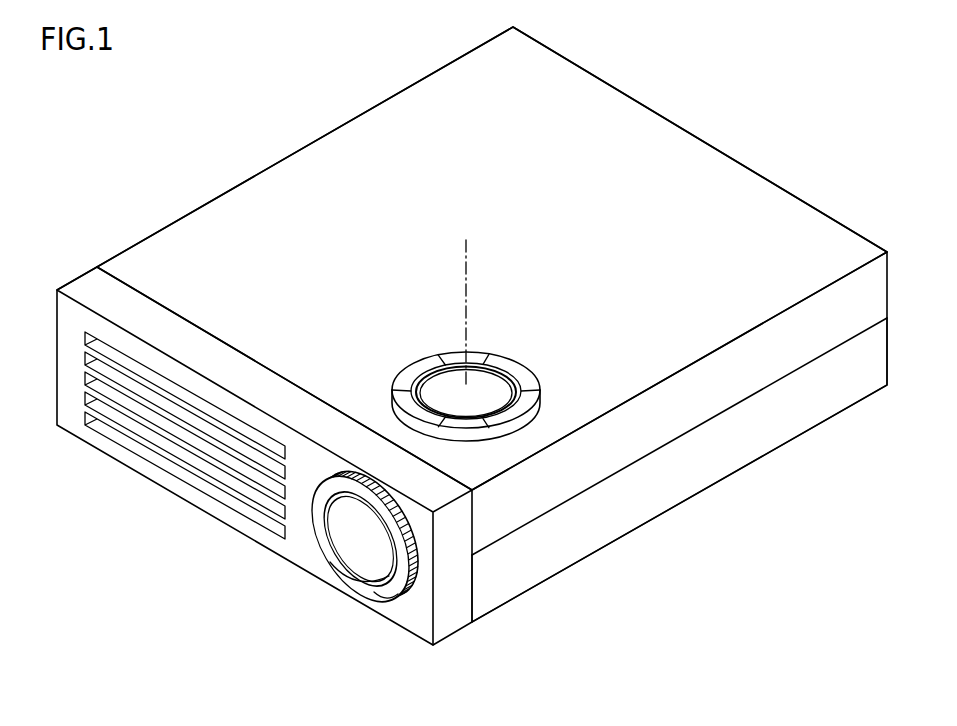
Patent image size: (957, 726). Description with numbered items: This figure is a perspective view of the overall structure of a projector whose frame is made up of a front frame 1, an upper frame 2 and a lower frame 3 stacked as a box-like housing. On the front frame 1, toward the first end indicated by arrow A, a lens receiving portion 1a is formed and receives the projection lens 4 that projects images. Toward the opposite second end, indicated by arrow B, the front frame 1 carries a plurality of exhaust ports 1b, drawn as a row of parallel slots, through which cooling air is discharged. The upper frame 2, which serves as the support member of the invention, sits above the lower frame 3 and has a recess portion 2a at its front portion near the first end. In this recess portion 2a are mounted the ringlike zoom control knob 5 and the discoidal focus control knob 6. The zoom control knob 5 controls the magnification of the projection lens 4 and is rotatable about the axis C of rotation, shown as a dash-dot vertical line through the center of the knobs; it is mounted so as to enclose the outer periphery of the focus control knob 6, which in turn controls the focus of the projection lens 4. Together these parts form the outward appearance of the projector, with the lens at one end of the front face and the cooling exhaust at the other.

The front frame 1 is at (445, 615).
The lens receiving portion 1a is at (390, 597).
The exhaust ports 1b is at (178, 393).
The upper frame 2 is at (173, 260).
The recess portion 2a is at (537, 410).
The lower frame 3 is at (557, 551).
The projection lens 4 is at (365, 548).
The zoom control knob 5 is at (447, 357).
The focus control knob 6 is at (495, 386).
The arrow A is at (223, 623).
The arrow B is at (183, 600).
The axis of rotation C is at (466, 262).